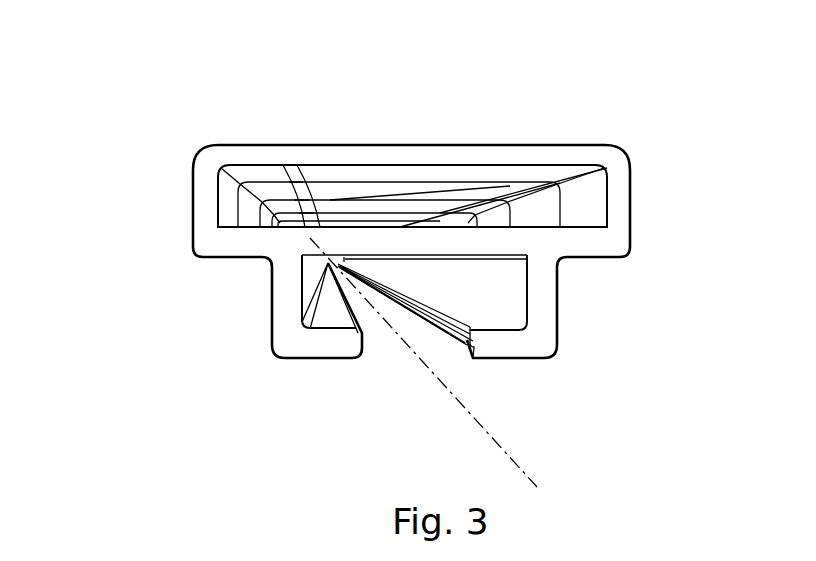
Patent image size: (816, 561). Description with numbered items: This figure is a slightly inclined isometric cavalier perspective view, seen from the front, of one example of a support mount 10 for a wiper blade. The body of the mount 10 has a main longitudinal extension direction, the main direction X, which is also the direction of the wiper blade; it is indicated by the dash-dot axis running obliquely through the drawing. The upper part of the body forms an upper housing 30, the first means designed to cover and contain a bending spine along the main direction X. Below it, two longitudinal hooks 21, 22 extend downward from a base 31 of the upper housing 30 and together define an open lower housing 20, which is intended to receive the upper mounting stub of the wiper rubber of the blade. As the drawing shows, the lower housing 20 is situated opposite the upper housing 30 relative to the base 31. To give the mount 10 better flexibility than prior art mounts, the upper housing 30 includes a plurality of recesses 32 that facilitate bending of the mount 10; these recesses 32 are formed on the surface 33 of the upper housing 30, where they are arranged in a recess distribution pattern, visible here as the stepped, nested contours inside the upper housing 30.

The support mount 10 is at (172, 137).
The lower housing 20 is at (508, 298).
The longitudinal hook 21 is at (283, 305).
The longitudinal hook 22 is at (550, 322).
The upper housing 30 is at (585, 200).
The base 31 is at (270, 242).
The recesses 32 is at (415, 177).
The surface 33 is at (323, 140).
The main direction X is at (483, 428).